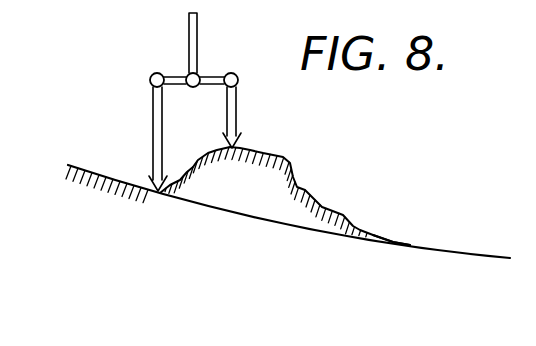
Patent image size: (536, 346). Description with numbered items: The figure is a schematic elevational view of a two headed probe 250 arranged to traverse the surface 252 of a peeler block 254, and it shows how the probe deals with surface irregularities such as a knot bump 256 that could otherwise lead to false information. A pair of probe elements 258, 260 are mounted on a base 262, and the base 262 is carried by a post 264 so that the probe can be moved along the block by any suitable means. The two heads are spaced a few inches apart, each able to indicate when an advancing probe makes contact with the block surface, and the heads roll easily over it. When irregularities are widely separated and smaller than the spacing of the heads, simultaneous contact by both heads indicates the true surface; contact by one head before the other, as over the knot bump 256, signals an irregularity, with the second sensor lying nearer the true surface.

The two headed probe 250 is at (177, 102).
The surface 252 is at (383, 237).
The peeler block 254 is at (418, 251).
The knot bump 256 is at (291, 168).
The probe element 258 is at (152, 120).
The probe element 260 is at (243, 82).
The base 262 is at (211, 74).
The post 264 is at (188, 45).